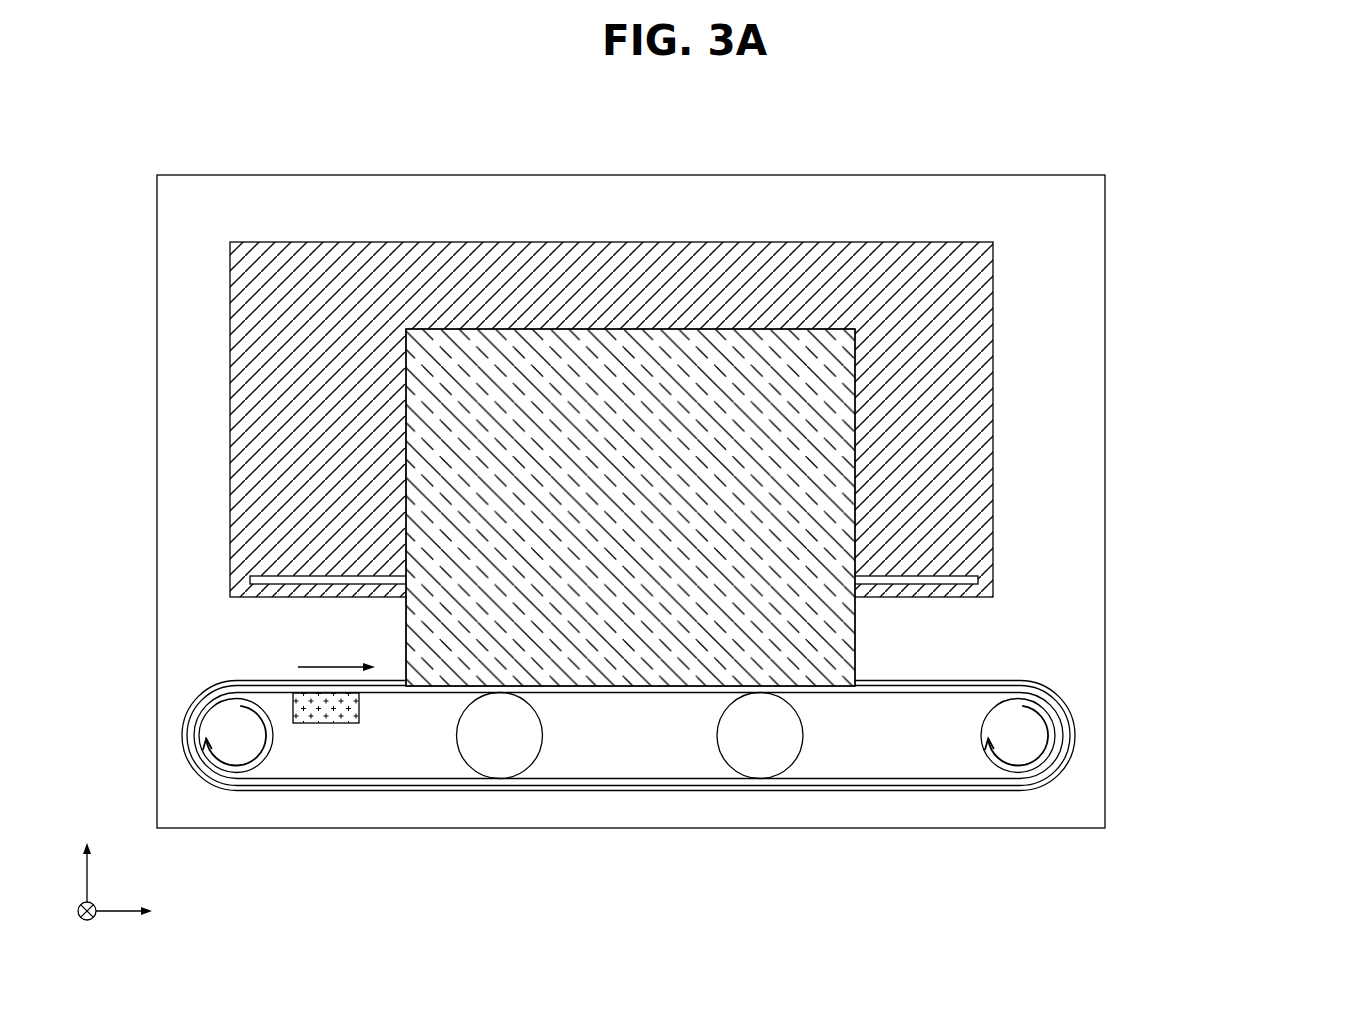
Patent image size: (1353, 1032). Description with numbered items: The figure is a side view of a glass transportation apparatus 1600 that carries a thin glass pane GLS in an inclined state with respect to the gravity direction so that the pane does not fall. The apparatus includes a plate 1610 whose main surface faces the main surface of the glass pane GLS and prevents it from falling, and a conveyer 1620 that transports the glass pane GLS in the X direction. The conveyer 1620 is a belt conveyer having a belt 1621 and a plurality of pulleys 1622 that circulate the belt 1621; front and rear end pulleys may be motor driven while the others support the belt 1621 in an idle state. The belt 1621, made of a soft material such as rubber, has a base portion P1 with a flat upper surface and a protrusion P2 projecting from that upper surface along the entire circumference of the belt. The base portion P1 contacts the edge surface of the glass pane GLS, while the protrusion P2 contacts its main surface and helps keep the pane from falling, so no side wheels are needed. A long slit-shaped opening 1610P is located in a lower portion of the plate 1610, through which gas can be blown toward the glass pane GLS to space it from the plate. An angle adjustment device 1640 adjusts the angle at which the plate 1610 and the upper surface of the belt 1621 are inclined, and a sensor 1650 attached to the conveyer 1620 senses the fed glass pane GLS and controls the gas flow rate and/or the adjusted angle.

The glass transportation apparatus 1600 is at (1118, 115).
The angle adjustment device 1640 is at (1085, 293).
The plate 1610 is at (978, 342).
The opening 1610P is at (970, 579).
The glass pane GLS is at (835, 393).
The sensor 1650 is at (307, 703).
The conveyer 1620 is at (762, 720).
The belt 1621 is at (725, 720).
The protrusion P2 is at (1022, 681).
The base portion P1 is at (1057, 705).
The pulleys 1622 is at (1057, 729).